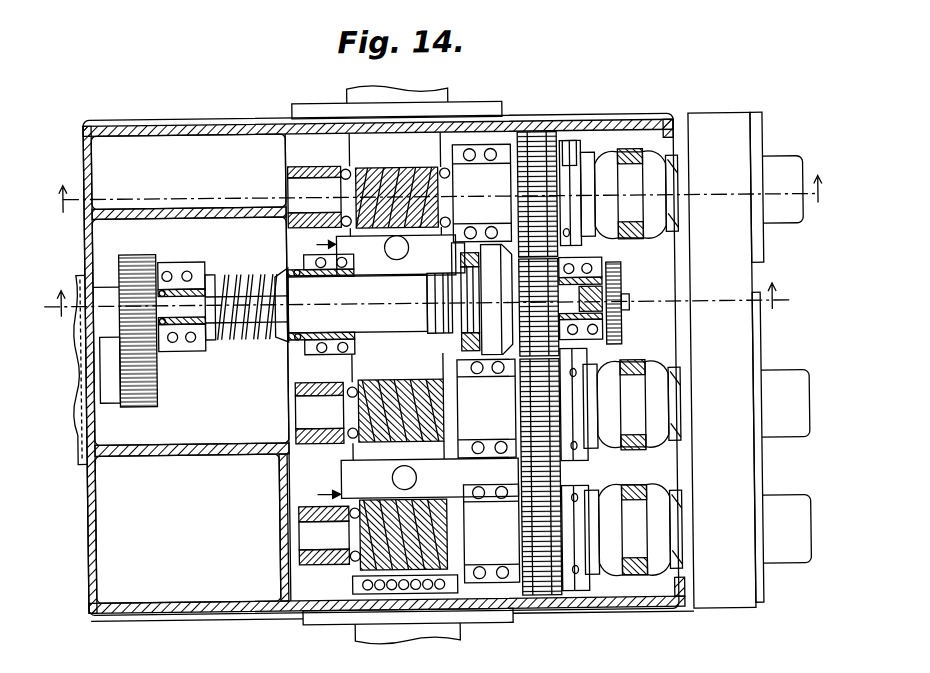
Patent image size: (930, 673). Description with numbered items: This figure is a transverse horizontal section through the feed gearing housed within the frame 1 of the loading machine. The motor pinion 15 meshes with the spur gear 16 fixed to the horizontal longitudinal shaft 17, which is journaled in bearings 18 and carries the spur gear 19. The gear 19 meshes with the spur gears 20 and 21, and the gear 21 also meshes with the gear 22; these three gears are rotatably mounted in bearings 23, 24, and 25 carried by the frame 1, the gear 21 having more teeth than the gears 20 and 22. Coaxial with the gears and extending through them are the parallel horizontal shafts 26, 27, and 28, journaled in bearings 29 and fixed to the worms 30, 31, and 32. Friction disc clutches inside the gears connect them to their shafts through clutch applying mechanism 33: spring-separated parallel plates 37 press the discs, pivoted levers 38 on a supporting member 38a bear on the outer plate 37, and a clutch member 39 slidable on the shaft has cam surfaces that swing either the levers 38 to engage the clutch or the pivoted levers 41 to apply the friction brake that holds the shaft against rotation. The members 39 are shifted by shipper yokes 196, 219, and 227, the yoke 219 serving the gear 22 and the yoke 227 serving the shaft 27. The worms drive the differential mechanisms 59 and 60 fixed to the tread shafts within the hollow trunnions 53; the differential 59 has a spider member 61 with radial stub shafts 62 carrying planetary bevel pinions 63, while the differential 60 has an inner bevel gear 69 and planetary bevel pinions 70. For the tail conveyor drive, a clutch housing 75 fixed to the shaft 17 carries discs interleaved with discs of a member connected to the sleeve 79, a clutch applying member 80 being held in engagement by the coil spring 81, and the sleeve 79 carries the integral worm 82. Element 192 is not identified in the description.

The frame 1 is at (203, 616).
The spur pinion 15 is at (137, 402).
The spur gear 16 is at (137, 249).
The horizontal shaft 17 is at (188, 358).
The bearings 18 is at (187, 283).
The spur gear 19 is at (465, 343).
The spur gear 20 is at (541, 133).
The spur gear 21 is at (528, 417).
The spur gear 22 is at (548, 575).
The bearing 23 is at (480, 172).
The bearing 24 is at (429, 478).
The bearing 25 is at (505, 553).
The horizontal shaft 26 is at (296, 191).
The horizontal shaft 27 is at (298, 410).
The horizontal shaft 28 is at (305, 538).
The bearings 29 is at (314, 168).
The worm 30 is at (447, 186).
The worm 31 is at (370, 400).
The worm 32 is at (356, 562).
The clutch applying mechanism 33 is at (606, 150).
The parallel plates 37 is at (567, 170).
The levers 38 is at (597, 162).
The supporting member 38a is at (585, 158).
The clutch member 39 is at (656, 160).
The pivoted levers 41 is at (672, 195).
The hollow trunnions 53 is at (356, 92).
The differential mechanism 59 is at (313, 244).
The differential mechanism 60 is at (315, 494).
The spider member 61 is at (343, 267).
The radial stub shafts 62 is at (398, 259).
The planetary bevel pinions 63 is at (352, 277).
The inner bevel gear 69 is at (447, 425).
The planetary bevel pinions 70 is at (420, 405).
The clutch housing 75 is at (453, 283).
The sleeve 79 is at (300, 313).
The clutch applying member 80 is at (470, 307).
The coil spring 81 is at (446, 278).
The worm 82 is at (240, 288).
The bearing 192 is at (474, 258).
The shipper yoke 196 is at (624, 153).
The shipper yoke 219 is at (634, 490).
The shipper yoke 227 is at (637, 372).